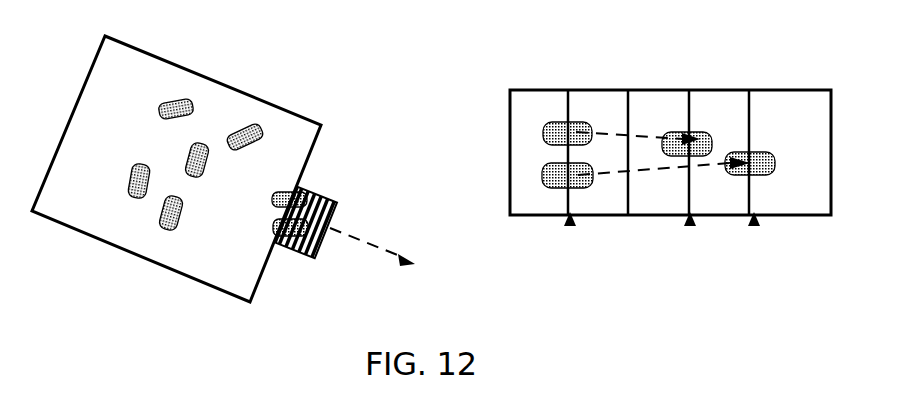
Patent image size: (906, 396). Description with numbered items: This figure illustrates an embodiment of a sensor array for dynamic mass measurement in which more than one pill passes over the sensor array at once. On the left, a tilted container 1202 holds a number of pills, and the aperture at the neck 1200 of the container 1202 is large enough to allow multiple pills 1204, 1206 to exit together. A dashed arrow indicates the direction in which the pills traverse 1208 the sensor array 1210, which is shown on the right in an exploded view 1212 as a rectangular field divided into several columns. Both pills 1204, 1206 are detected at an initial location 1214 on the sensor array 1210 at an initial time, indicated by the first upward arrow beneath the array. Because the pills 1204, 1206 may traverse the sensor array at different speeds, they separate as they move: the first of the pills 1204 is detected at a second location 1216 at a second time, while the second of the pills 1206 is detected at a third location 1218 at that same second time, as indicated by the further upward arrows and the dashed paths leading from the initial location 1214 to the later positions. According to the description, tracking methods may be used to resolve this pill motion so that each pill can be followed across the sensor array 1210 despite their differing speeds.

The neck 1200 is at (339, 200).
The container 1202 is at (184, 46).
The first pill 1204 is at (302, 188).
The second pill 1206 is at (293, 253).
The traverse 1208 is at (356, 236).
The sensor array 1210 is at (653, 97).
The exploded view 1212 is at (770, 64).
The initial location 1214 is at (571, 226).
The second location 1216 is at (690, 226).
The third location 1218 is at (755, 226).